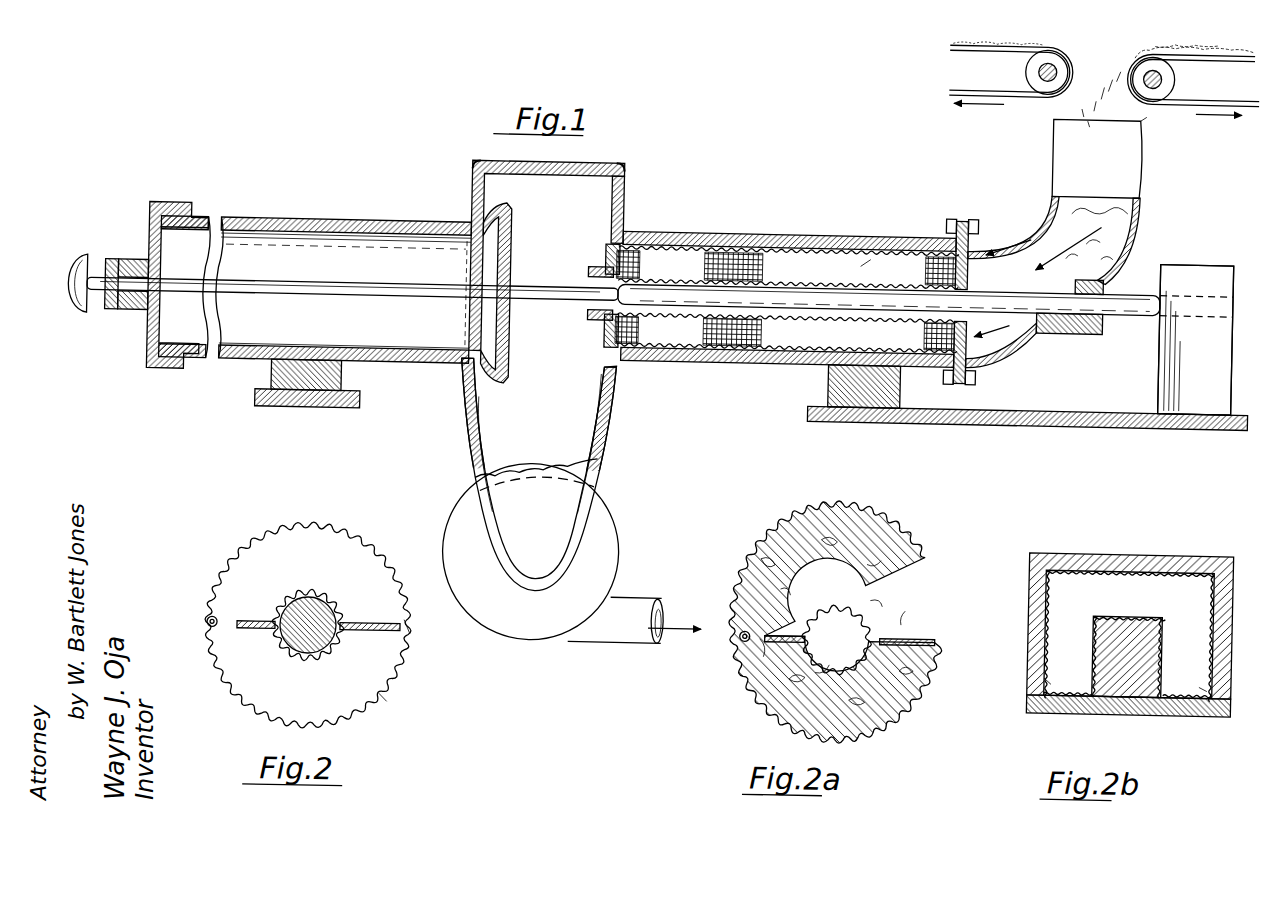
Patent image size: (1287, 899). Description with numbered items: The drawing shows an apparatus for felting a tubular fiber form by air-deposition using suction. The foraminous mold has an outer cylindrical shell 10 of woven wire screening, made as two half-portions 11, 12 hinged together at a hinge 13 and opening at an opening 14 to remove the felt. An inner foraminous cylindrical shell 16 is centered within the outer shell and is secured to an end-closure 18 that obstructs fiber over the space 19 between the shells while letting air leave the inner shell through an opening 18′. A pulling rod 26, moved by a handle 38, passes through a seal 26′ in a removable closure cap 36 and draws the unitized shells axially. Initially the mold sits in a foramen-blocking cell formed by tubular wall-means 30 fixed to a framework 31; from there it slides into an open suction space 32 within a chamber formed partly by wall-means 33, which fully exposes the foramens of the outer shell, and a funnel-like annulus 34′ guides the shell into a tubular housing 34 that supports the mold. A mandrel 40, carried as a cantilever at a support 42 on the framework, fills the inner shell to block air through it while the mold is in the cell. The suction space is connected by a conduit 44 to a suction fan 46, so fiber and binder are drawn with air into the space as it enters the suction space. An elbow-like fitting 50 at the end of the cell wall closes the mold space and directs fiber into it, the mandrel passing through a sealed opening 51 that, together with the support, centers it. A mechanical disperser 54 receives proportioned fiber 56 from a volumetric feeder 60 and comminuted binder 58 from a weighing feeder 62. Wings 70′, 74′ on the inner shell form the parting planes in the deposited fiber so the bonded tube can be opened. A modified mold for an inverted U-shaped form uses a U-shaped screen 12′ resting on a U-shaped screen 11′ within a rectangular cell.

In FIG. 1, the outer cylindrical shell 10 is at (712, 247).
In FIG. 2, the outer cylindrical shell 10 is at (408, 664).
In FIG. 2A, the outer cylindrical shell 10 is at (762, 706).
In FIG. 1, the half-portion of outer shell 11 is at (790, 345).
In FIG. 2, the half-portion of outer shell 11 is at (386, 700).
In FIG. 2A, the half-portion of outer shell 11 is at (895, 722).
In FIG. 1, the half-portion of outer shell 12 is at (822, 247).
In FIG. 2, the half-portion of outer shell 12 is at (362, 538).
In FIG. 2A, the half-portion of outer shell 12 is at (790, 512).
In FIG. 2, the hinge 13 is at (207, 621).
In FIG. 2A, the hinge 13 is at (740, 642).
In FIG. 2, the opening of outer shell 14 is at (410, 630).
In FIG. 1, the inner foraminous cylindrical shell 16 is at (866, 284).
In FIG. 2, the inner foraminous cylindrical shell 16 is at (318, 600).
In FIG. 2A, the inner foraminous cylindrical shell 16 is at (868, 626).
In FIG. 1, the end-means (end-closure) 18 is at (596, 323).
In FIG. 1, the opening 18′ is at (588, 275).
In FIG. 1, the space between the shells 19 is at (852, 266).
In FIG. 1, the pulling rod 26 is at (405, 301).
In FIG. 1, the seal 26′ is at (113, 322).
In FIG. 1, the tubular wall-means (cylinder cell wall) 30 is at (673, 232).
In FIG. 1, the base or framework 31 is at (273, 383).
In FIG. 1, the open space 32 is at (560, 226).
In FIG. 1, the wall-means 33 is at (619, 166).
In FIG. 1, the tubular housing 34 is at (380, 226).
In FIG. 1, the funnel-like annulus 34′ is at (507, 374).
In FIG. 1, the removable closure cap or seal 36 is at (148, 230).
In FIG. 1, the handle 38 is at (78, 268).
In FIG. 1, the mandrel 40 is at (1112, 307).
In FIG. 2, the mandrel 40 is at (330, 611).
In FIG. 1, the mandrel support 42 is at (1160, 282).
In FIG. 1, the conduit 44 is at (587, 471).
In FIG. 1, the suction fan 46 is at (616, 530).
In FIG. 1, the elbow-like fitting 50 is at (1015, 345).
In FIG. 1, the sealed opening 51 is at (1107, 280).
In FIG. 1, the mechanical disperser 54 is at (1106, 145).
In FIG. 1, the fiber 56 is at (1115, 88).
In FIG. 1, the comminuted binder 58 is at (1072, 92).
In FIG. 1, the volumetric feeder 60 is at (1205, 81).
In FIG. 1, the weighing feeder 62 is at (1008, 78).
In FIG. 2, the wing or flange 70′ is at (370, 620).
In FIG. 2A, the wing or flange 70′ is at (912, 634).
In FIG. 2, the wing or flange 74′ is at (255, 622).
In FIG. 2A, the wing or flange 74′ is at (798, 636).
In FIG. 2B, the U-shaped screen 12′ is at (1060, 576).
In FIG. 2B, the U-shaped screen 11′ is at (1128, 618).